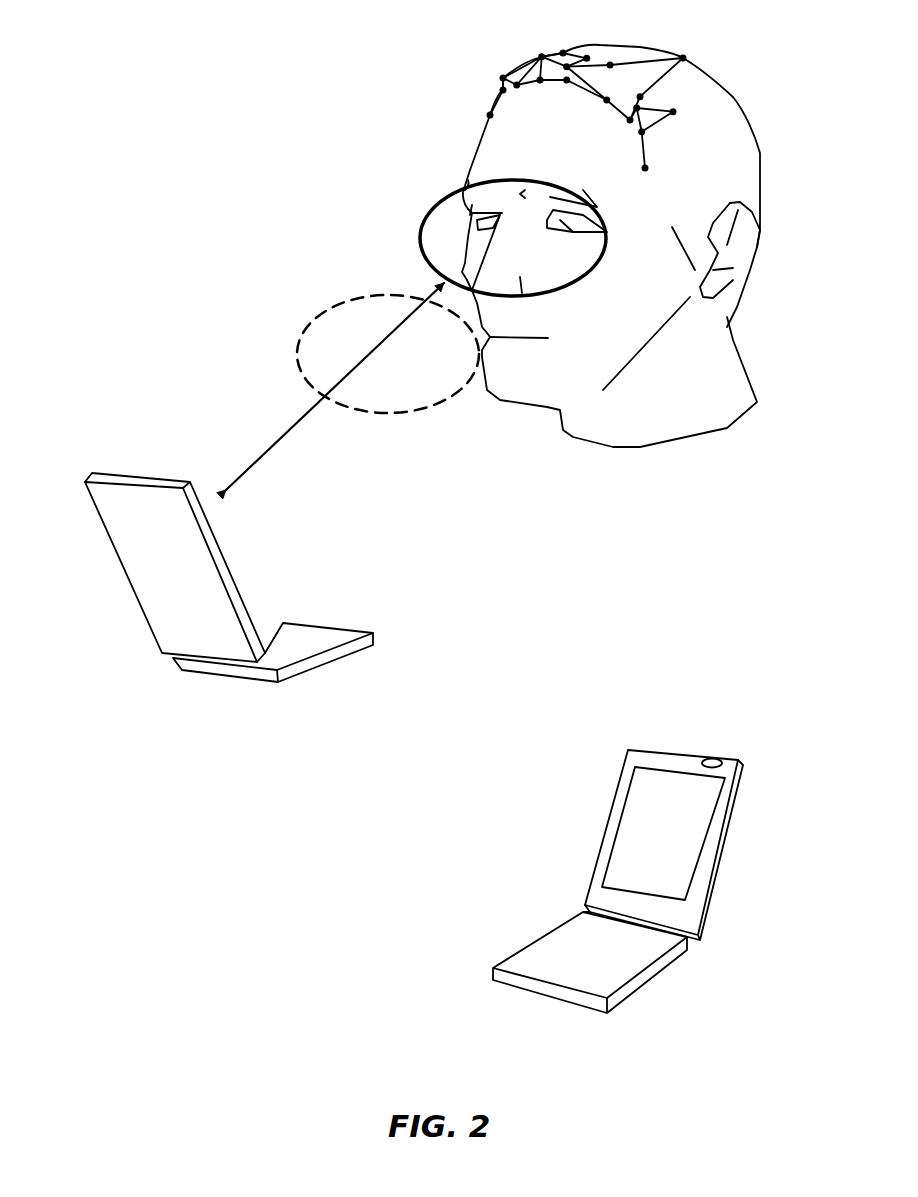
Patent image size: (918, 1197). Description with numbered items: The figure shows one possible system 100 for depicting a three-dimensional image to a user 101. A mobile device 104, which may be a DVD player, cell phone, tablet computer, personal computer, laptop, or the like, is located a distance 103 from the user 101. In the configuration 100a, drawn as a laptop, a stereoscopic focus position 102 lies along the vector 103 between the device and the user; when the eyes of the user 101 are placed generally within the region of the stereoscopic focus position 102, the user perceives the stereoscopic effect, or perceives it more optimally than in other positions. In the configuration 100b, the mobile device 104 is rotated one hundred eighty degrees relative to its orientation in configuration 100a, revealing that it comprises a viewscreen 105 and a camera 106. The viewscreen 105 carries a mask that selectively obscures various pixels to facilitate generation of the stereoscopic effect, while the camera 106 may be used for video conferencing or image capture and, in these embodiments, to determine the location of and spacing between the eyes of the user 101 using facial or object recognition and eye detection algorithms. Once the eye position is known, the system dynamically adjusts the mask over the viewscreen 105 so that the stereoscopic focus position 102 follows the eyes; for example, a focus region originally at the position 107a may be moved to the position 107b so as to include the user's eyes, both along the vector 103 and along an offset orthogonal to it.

The system 100 is at (202, 68).
The configuration 100a is at (94, 380).
The configuration 100b is at (644, 688).
The user 101 is at (478, 143).
The stereoscopic focus position 102 is at (450, 203).
The distance 103 is at (290, 427).
The mobile device 104 is at (137, 477).
The viewscreen 105 is at (628, 830).
The camera 106 is at (714, 758).
The position 107a is at (387, 295).
The position 107b is at (422, 228).